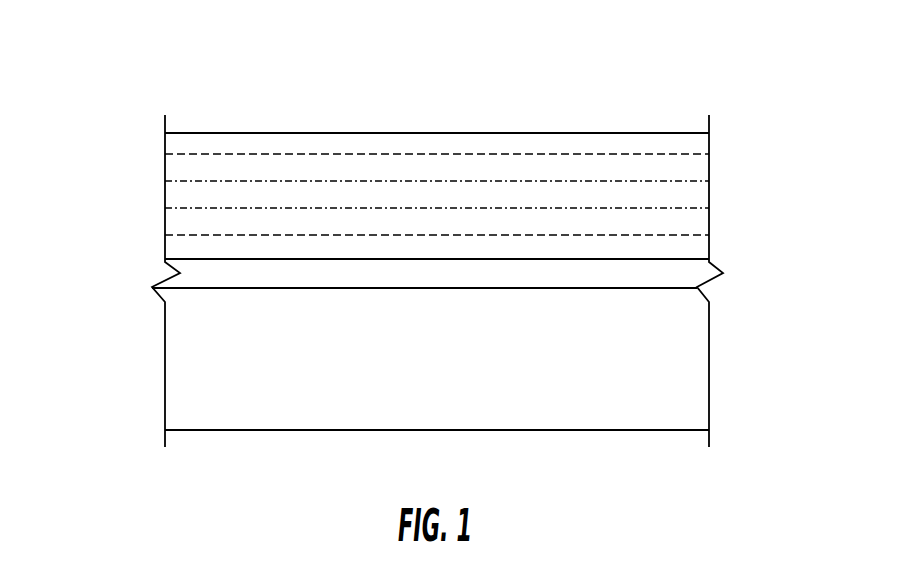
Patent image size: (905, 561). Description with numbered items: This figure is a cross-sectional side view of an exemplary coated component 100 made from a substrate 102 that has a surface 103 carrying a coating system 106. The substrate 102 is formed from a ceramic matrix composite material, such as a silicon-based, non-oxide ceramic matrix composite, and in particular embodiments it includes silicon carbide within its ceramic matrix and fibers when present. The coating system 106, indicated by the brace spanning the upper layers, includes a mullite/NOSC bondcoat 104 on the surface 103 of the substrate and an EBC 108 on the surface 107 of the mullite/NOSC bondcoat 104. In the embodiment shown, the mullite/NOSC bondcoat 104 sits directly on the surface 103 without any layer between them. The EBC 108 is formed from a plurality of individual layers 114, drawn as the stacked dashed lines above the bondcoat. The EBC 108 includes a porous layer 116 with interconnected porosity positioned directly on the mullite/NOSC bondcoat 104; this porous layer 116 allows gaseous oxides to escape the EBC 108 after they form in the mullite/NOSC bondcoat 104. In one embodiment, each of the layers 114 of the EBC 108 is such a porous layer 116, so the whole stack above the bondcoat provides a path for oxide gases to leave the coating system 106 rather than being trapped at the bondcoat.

The coated component 100 is at (99, 62).
The substrate 102 is at (292, 388).
The surface 103 is at (505, 272).
The mullite/NOSC bondcoat 104 is at (685, 281).
The coating system 106 is at (143, 135).
The surface 107 is at (357, 275).
The EBC 108 is at (758, 129).
The layers 114 is at (264, 167).
The porous layer 116 is at (680, 238).